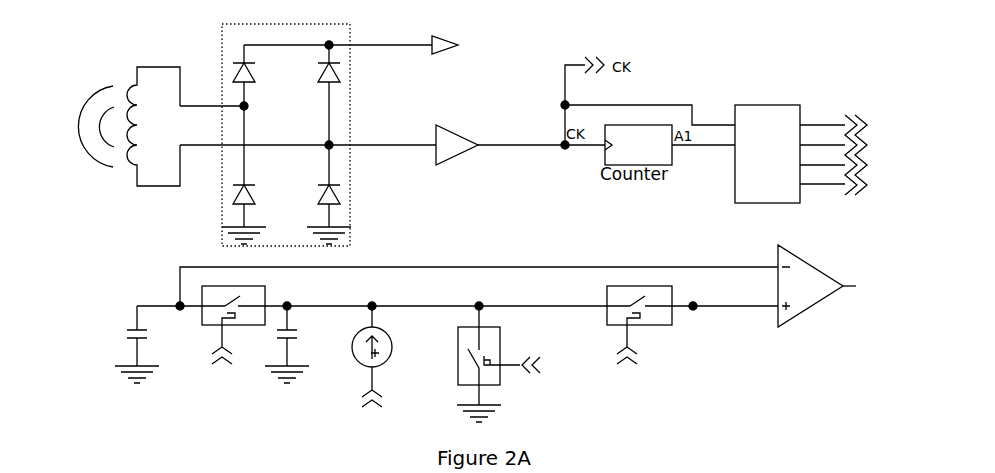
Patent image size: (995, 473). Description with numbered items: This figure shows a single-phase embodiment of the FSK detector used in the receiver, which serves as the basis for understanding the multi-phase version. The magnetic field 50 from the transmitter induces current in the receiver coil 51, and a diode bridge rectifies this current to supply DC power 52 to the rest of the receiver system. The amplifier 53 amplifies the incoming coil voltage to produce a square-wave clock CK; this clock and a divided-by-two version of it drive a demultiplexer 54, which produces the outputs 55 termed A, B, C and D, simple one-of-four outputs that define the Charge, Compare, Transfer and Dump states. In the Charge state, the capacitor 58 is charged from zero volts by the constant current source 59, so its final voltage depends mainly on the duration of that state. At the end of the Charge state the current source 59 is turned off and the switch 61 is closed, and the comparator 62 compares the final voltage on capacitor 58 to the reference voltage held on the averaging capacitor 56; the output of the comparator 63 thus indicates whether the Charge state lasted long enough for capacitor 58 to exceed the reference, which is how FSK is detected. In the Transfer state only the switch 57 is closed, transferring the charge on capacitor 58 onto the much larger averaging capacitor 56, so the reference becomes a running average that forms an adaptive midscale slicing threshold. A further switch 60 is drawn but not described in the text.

The magnetic field 50 is at (88, 157).
The receiver coil 51 is at (137, 67).
The DC power 52 is at (447, 35).
The amplifier 53 is at (466, 137).
The demultiplexer 54 is at (750, 103).
The outputs 55 is at (845, 103).
The averaging capacitor 56 is at (123, 328).
The switch 57 is at (212, 330).
The capacitor 58 is at (298, 328).
The constant current source 59 is at (395, 327).
The switch D 60 is at (500, 328).
The switch 61 is at (672, 328).
The comparator 62 is at (810, 314).
The output of the comparator 63 is at (847, 276).